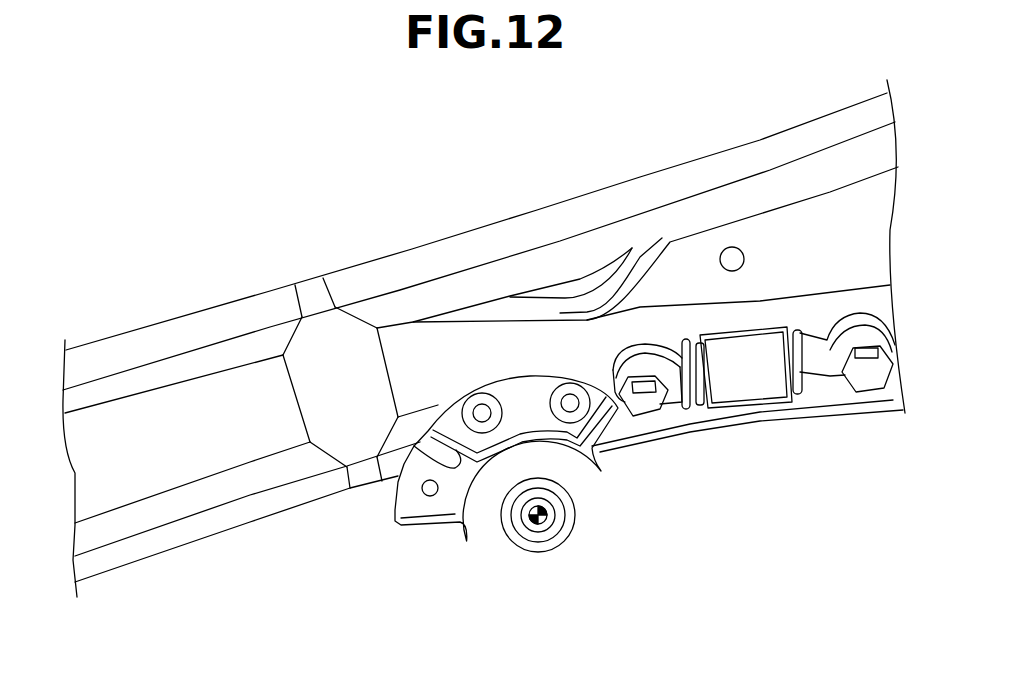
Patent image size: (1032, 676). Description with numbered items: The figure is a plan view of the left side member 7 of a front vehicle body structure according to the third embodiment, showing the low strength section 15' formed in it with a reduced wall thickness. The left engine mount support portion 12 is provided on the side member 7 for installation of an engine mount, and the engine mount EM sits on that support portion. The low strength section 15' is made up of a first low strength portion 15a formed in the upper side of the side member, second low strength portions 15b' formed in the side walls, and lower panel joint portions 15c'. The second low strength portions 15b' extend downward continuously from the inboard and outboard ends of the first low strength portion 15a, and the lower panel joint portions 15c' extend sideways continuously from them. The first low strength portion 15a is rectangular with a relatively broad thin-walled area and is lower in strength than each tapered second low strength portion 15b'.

The left side member 7 is at (537, 208).
The low strength section 15' is at (479, 345).
The first low strength portion 15a is at (322, 387).
The second low strength portions 15b' is at (341, 374).
The lower panel joint portions 15c' is at (343, 368).
The left engine mount support portion 12 is at (614, 500).
The electric motor EM is at (548, 521).